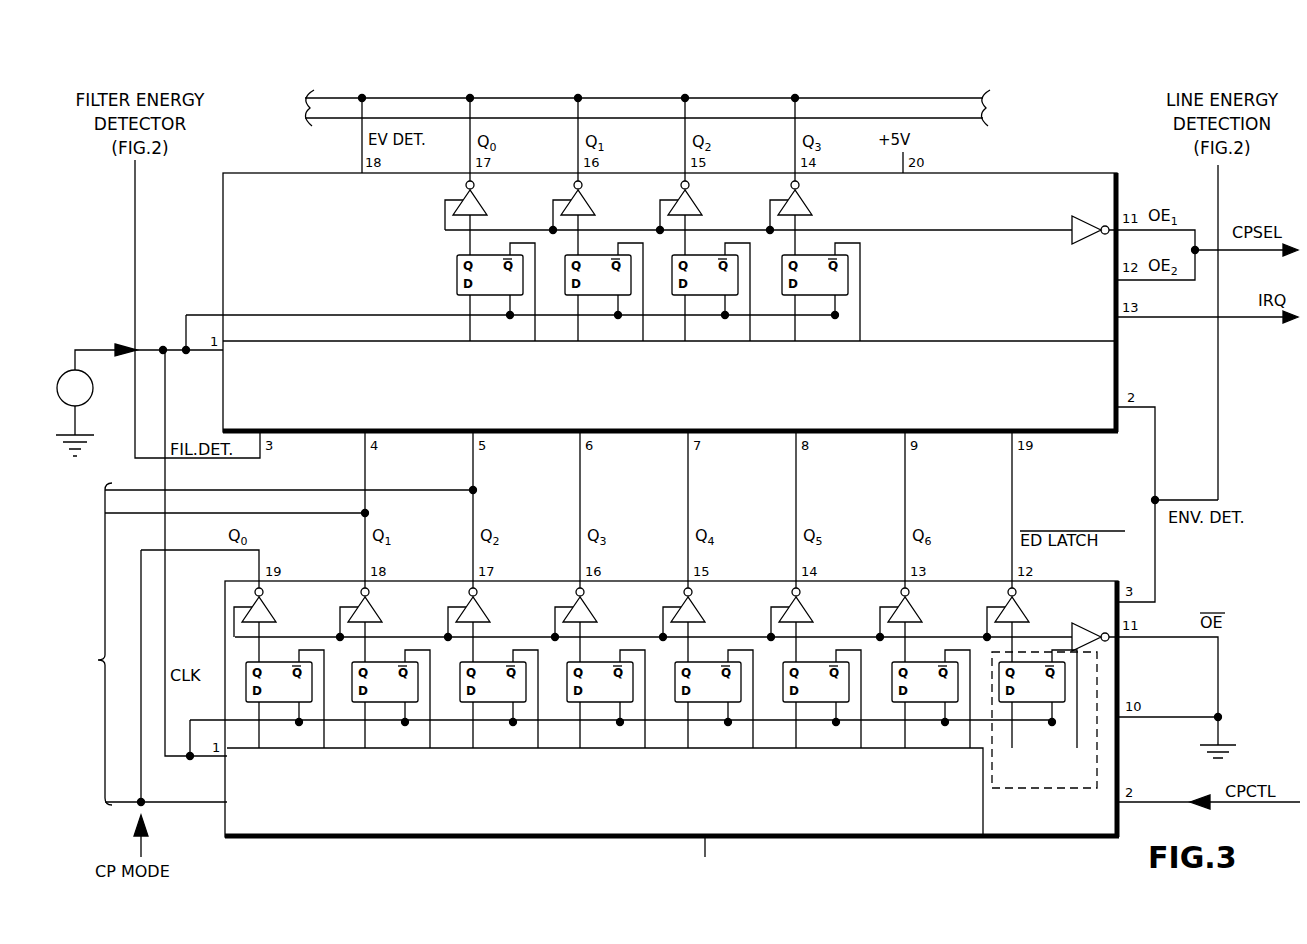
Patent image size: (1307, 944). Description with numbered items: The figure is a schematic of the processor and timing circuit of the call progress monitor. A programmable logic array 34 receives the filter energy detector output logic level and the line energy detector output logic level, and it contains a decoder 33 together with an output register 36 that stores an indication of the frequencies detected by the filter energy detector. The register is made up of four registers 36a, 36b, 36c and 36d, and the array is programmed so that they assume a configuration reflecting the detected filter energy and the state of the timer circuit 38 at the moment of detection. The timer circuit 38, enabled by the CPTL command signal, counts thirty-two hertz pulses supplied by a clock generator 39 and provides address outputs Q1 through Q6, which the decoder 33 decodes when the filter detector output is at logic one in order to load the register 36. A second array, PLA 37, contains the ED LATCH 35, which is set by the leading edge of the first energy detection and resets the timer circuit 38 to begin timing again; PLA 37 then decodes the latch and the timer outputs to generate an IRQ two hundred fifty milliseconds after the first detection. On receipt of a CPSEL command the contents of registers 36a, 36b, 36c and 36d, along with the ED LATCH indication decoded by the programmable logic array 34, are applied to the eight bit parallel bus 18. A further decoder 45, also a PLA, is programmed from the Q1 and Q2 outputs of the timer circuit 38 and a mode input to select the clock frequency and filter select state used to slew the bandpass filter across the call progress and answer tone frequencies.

The 8 bit parallel bus 18 is at (946, 110).
The decoder 33 is at (776, 386).
The programmable logic array 34 is at (222, 211).
The ED LATCH 35 is at (1046, 788).
The output register 36 is at (999, 300).
The register 36a is at (496, 254).
The register 36b is at (604, 254).
The register 36c is at (711, 254).
The register 36d is at (821, 254).
The PLA 37 is at (912, 840).
The timer circuit 38 is at (645, 616).
The 32 Hz clock generator 39 is at (139, 393).
The decoder 45 is at (271, 639).